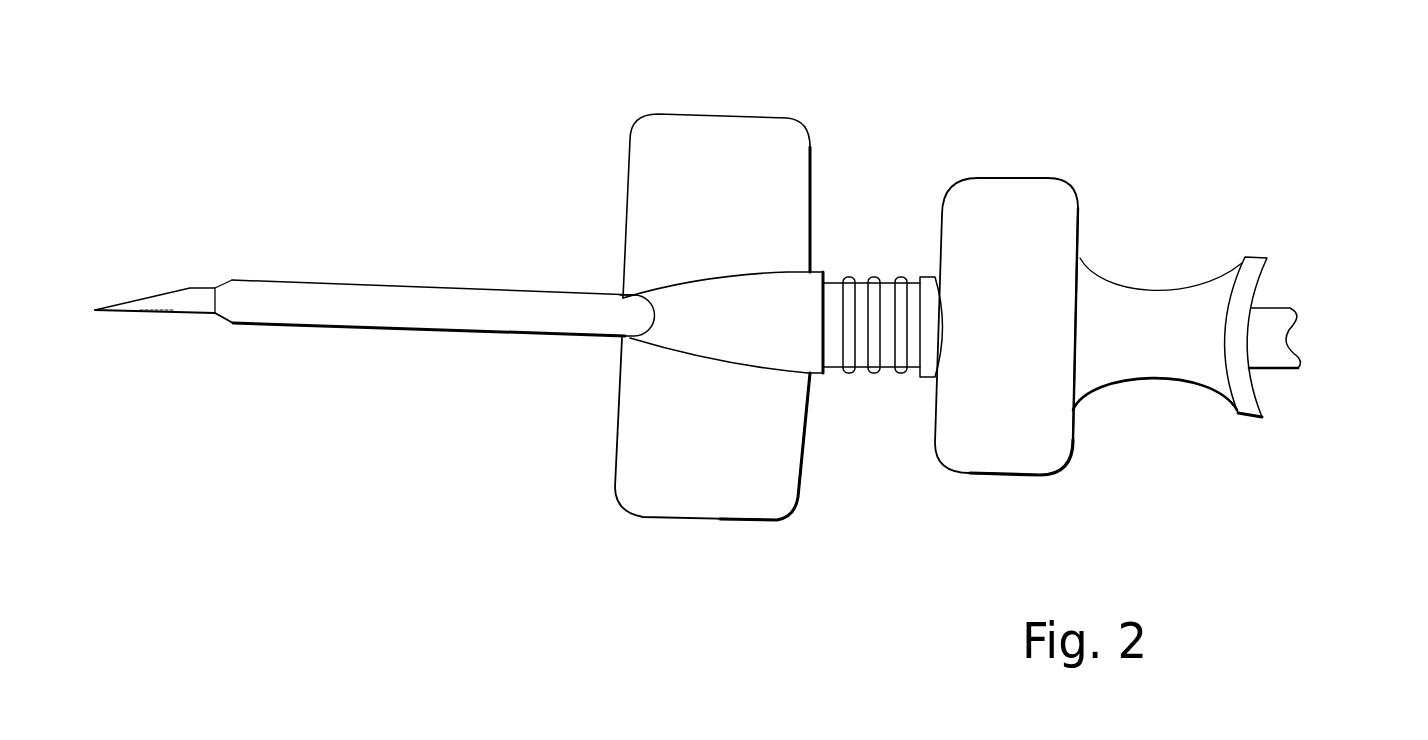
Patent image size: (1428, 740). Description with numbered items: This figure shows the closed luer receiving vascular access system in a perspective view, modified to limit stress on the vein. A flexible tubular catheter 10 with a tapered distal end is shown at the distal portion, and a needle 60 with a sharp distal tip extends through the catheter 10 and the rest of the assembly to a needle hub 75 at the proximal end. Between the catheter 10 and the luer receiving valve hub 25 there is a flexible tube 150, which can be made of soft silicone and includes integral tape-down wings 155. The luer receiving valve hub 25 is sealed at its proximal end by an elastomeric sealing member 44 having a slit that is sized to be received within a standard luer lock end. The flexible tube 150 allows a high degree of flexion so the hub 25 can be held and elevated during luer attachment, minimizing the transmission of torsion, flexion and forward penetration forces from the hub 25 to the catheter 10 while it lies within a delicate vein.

The flexible tubular catheter 10 is at (342, 288).
The needle 60 is at (177, 311).
The integral tape-down wings 155 is at (748, 125).
The flexible tube 150 is at (910, 342).
The luer receiving valve hub 25 is at (1060, 188).
The elastomeric sealing member 44 is at (1267, 258).
The needle hub 75 is at (1278, 315).